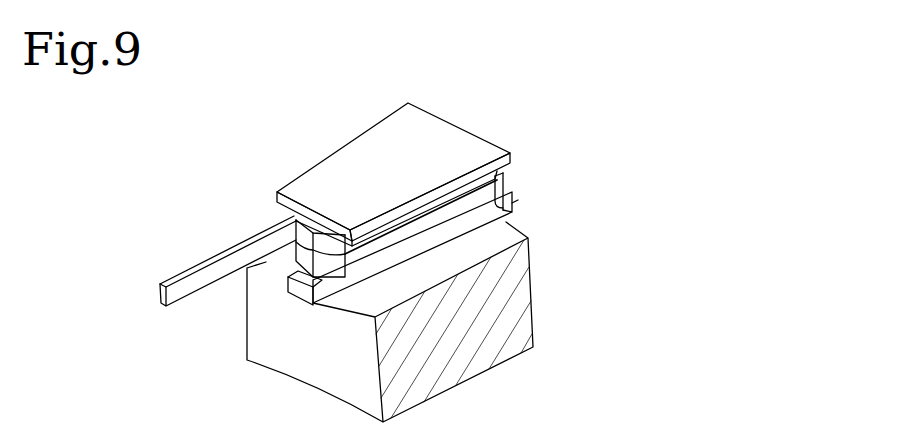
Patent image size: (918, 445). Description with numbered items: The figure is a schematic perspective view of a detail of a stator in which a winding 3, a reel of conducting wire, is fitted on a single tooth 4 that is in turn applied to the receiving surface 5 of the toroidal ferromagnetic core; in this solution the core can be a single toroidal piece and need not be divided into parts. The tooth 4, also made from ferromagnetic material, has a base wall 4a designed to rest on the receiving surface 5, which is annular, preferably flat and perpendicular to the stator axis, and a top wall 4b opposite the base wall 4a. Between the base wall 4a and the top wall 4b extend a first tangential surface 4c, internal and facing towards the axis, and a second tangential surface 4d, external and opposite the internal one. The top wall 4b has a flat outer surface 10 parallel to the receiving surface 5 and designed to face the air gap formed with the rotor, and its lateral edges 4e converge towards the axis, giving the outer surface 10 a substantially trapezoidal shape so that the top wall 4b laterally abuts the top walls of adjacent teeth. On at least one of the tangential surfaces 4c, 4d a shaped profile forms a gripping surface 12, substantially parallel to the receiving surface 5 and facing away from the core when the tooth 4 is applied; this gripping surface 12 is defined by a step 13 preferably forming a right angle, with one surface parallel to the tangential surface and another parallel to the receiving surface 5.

The winding 3 is at (165, 275).
The tooth 4 is at (479, 116).
The base wall 4a is at (433, 246).
The top wall 4b is at (347, 163).
The first tangential surface 4c is at (263, 231).
The second tangential surface 4d is at (488, 142).
The lateral edge 4e is at (497, 170).
The receiving surface 5 is at (470, 255).
The flat outer surface 10 is at (386, 133).
The gripping surface 12 is at (503, 190).
The step 13 is at (517, 210).